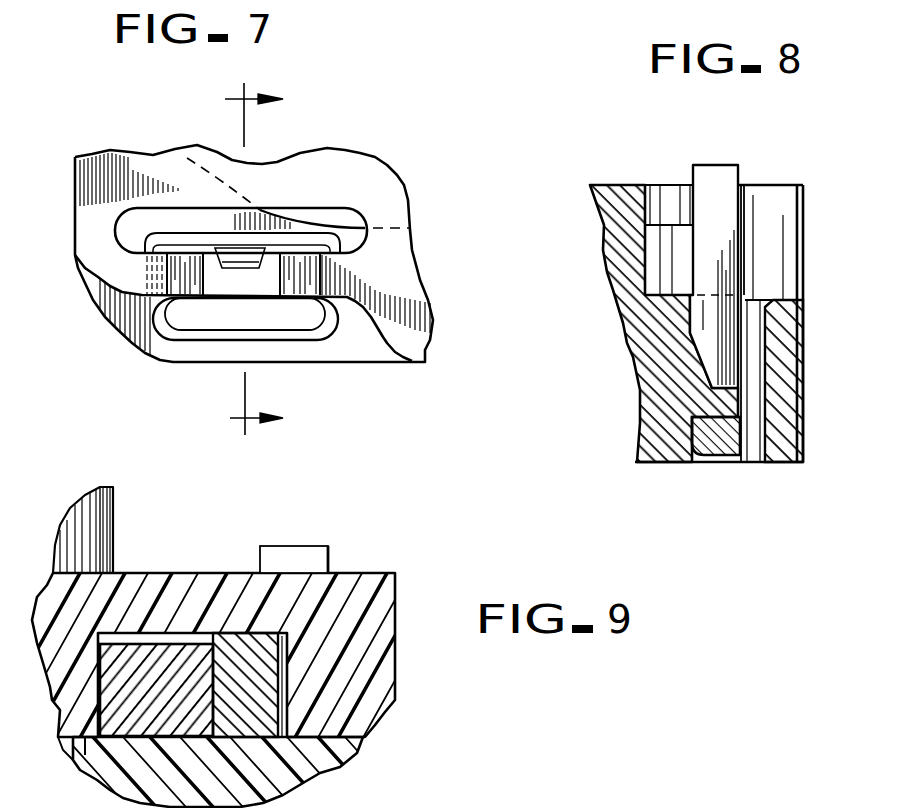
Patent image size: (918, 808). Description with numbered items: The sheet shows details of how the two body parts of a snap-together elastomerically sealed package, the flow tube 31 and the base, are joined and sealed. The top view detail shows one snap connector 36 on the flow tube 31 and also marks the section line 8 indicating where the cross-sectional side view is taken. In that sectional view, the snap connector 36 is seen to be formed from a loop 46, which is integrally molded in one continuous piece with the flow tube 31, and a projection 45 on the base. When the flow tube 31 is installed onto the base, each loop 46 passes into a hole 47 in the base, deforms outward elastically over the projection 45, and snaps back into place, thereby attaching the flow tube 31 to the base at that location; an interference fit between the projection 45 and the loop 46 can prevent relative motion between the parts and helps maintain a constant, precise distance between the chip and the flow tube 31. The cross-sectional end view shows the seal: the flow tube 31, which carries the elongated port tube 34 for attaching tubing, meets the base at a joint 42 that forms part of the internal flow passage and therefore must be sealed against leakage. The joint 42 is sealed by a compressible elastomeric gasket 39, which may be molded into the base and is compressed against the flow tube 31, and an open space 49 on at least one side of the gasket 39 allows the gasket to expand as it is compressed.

In FIG. 7, the section line 8- 8 is at (245, 260).
In FIG. 9, the flow tube 31 is at (397, 672).
In FIG. 9, the port tube 34 is at (112, 518).
In FIG. 7, the snap connector 36 is at (390, 372).
In FIG. 8, the snap connector 36 is at (683, 162).
In FIG. 9, the gasket 39 is at (175, 657).
In FIG. 9, the joint 42 is at (365, 737).
In FIG. 7, the projection 45 is at (237, 270).
In FIG. 8, the projection 45 is at (710, 387).
In FIG. 8, the loop 46 is at (718, 462).
In FIG. 7, the hole 47 is at (284, 312).
In FIG. 9, the open space 49 is at (135, 640).